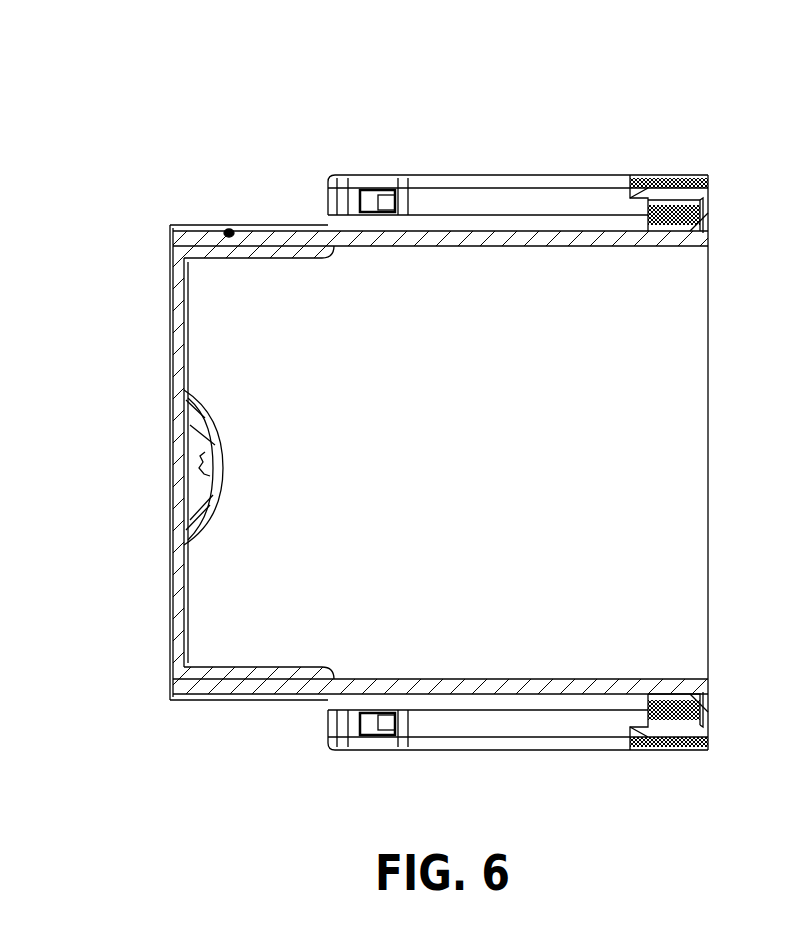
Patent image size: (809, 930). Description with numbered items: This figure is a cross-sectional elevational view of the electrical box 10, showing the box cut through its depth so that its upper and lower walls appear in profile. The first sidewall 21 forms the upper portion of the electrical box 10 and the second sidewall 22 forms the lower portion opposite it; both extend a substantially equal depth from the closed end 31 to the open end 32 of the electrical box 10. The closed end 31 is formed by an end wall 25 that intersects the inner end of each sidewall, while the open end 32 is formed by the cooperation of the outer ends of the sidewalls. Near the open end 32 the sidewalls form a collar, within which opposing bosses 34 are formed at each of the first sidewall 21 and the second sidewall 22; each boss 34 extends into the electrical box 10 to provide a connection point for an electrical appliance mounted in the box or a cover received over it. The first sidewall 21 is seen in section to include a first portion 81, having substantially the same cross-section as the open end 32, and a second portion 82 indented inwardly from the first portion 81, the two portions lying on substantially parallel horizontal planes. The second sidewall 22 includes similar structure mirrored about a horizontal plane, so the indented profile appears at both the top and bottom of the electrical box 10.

The electrical box 10 is at (143, 137).
The first sidewall 21 is at (525, 245).
The second sidewall 22 is at (535, 678).
The end wall 25 is at (177, 313).
The closed end 31 is at (170, 378).
The open end 32 is at (710, 333).
The bosses 34 is at (712, 200).
The first portion 81 is at (591, 168).
The second portion 82 is at (226, 228).